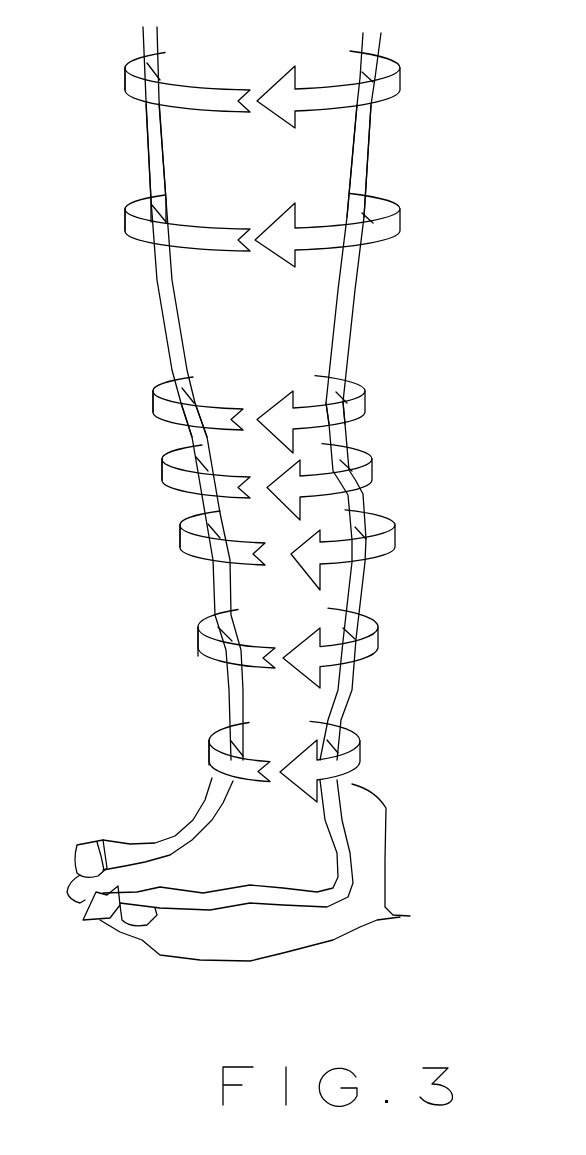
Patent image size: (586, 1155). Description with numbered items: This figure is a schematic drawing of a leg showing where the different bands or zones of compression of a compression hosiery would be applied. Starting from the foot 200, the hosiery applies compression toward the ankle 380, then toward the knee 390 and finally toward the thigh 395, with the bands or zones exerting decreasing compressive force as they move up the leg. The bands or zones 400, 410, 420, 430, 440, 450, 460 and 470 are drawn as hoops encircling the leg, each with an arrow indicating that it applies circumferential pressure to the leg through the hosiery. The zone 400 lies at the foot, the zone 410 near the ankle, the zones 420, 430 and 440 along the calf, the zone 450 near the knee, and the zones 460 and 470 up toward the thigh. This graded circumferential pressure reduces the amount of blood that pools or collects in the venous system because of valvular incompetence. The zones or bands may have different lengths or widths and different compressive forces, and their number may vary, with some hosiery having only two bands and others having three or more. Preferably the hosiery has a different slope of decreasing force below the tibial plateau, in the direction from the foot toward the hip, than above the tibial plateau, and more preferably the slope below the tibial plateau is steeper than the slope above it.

The compression band or zone 470 is at (400, 3).
The compression band or zone 460 is at (405, 85).
The compression band or zone 450 is at (403, 213).
The compression band or zone 440 is at (380, 393).
The compression band or zone 430 is at (383, 467).
The compression band or zone 420 is at (387, 637).
The compression band or zone 410 is at (367, 755).
The compression band or zone 400 is at (410, 916).
The thigh 395 is at (213, 155).
The knee 390 is at (237, 448).
The ankle 380 is at (263, 840).
The foot 200 is at (183, 873).